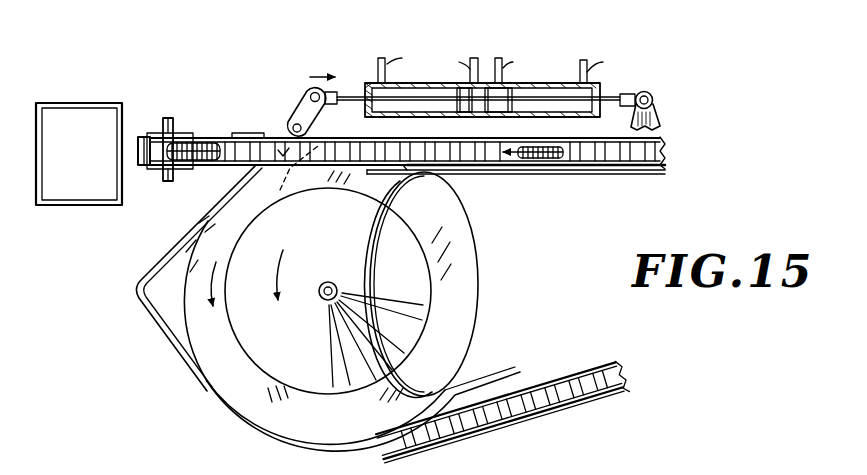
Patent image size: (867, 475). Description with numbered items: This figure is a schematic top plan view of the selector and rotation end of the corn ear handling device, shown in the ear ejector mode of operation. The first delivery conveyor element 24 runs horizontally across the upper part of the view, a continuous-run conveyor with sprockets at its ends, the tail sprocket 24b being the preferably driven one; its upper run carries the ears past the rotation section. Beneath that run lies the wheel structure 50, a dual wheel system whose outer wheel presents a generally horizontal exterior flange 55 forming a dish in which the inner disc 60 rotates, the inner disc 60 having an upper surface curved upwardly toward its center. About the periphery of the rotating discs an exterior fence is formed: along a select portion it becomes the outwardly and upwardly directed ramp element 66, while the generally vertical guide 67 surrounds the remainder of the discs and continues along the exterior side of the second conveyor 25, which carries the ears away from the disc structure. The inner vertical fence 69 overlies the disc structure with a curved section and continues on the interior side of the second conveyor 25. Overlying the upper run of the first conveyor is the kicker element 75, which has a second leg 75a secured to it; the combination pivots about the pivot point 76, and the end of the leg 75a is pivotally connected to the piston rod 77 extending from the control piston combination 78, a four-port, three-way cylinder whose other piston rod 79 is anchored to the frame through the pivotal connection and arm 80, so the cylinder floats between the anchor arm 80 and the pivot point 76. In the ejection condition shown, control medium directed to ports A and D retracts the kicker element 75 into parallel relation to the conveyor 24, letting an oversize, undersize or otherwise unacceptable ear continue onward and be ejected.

The first delivery conveyor element 24 is at (572, 165).
The tail sprocket 24b is at (164, 117).
The second conveyor 25 is at (513, 400).
The wheel structure 50 is at (488, 326).
The exterior flange 55 is at (243, 384).
The inner disc 60 is at (306, 342).
The ramp element 66 is at (157, 294).
The vertical guide 67 is at (268, 441).
The inner vertical fence 69 is at (376, 292).
The kicker element 75 is at (245, 133).
The second leg 75a is at (298, 102).
The pivot point 76 is at (287, 131).
The piston rod 77 is at (353, 90).
The control piston combination 78 is at (427, 74).
The other piston rod 79 is at (617, 90).
The anchor arm 80 is at (660, 114).